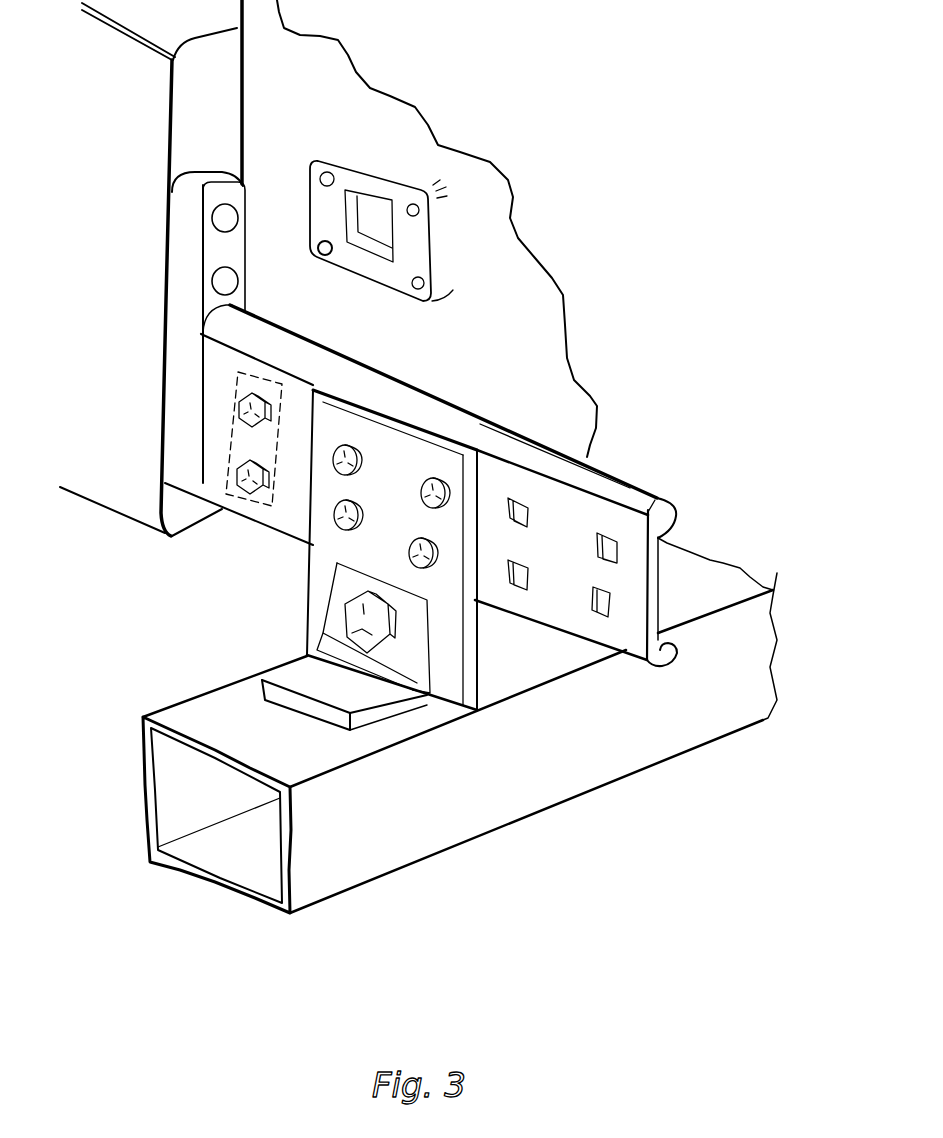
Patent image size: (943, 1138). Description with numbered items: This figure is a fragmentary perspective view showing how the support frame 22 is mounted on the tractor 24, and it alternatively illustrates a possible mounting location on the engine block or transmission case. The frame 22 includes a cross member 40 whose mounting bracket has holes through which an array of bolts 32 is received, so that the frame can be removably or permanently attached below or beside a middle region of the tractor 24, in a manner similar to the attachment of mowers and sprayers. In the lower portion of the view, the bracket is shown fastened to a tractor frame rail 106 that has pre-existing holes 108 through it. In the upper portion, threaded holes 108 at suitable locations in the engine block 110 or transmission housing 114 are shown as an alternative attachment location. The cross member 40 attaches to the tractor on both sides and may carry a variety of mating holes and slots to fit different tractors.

The support frame 22 is at (456, 768).
The tractor 24 is at (662, 229).
The bolts 32 is at (432, 540).
The cross member 40 is at (418, 863).
The frame rail 106 is at (618, 483).
The holes 108 is at (411, 206).
The engine block 110 is at (439, 189).
The transmission housing 114 is at (470, 150).